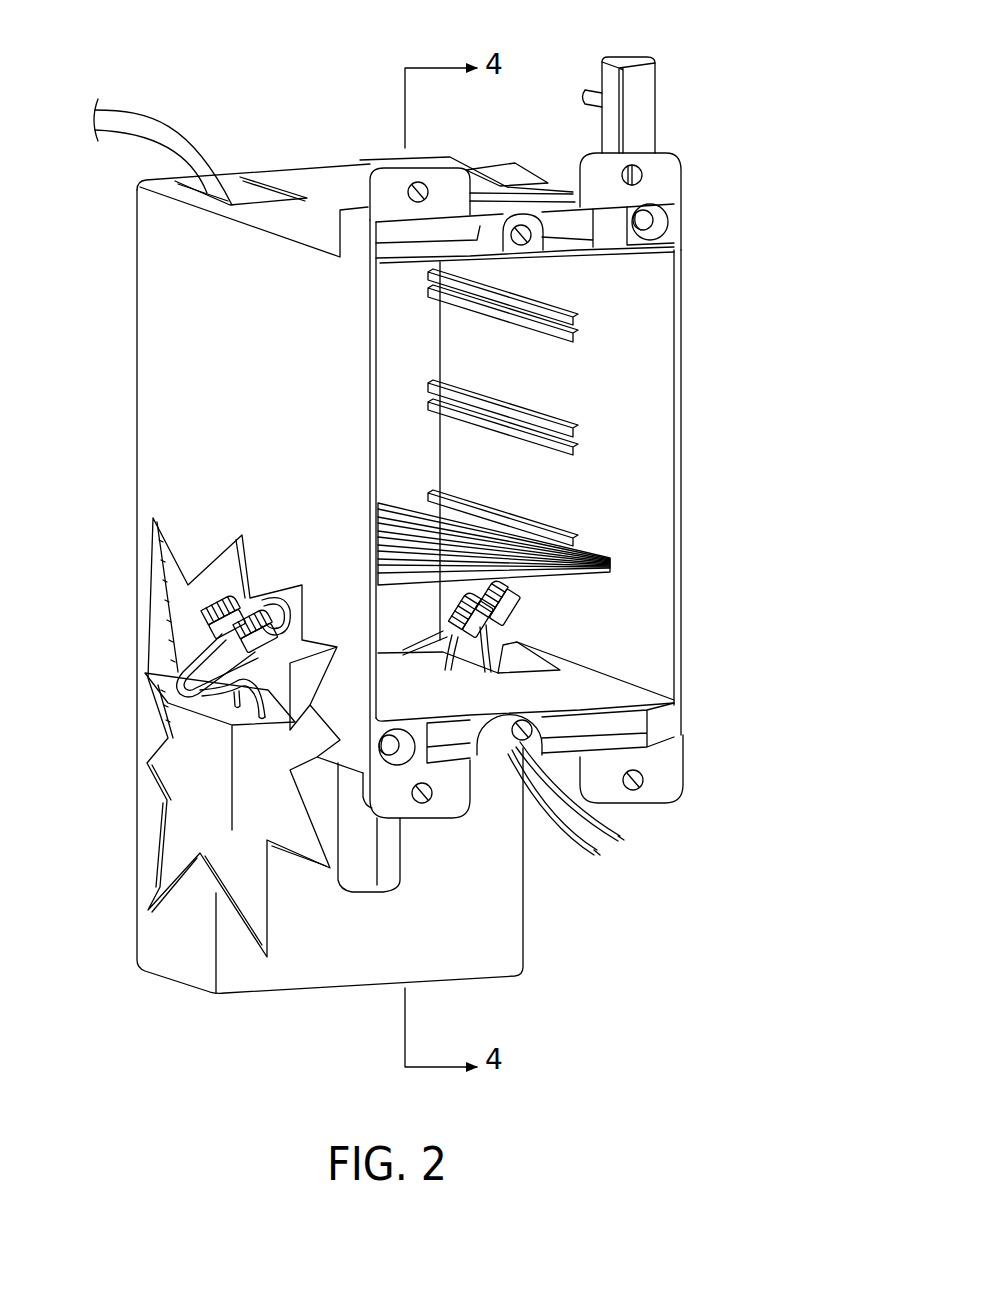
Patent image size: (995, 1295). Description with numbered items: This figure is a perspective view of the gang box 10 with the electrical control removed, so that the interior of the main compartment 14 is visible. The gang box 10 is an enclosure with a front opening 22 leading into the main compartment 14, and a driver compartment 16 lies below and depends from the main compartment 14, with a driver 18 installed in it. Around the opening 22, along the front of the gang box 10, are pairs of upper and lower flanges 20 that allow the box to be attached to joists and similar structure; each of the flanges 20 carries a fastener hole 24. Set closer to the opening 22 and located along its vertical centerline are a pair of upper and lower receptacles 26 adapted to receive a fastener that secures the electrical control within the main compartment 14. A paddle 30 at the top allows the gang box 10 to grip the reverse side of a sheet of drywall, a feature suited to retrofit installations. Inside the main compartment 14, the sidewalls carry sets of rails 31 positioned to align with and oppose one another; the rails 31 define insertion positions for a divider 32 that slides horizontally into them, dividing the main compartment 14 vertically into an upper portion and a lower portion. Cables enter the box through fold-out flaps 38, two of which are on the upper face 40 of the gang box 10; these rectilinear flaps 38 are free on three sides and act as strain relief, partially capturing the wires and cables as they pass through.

The gang box 10 is at (246, 79).
The main compartment 14 is at (634, 411).
The driver compartment 16 is at (168, 942).
The driver 18 is at (195, 766).
The upper and lower flanges 20 is at (383, 196).
The opening 22 is at (620, 522).
The fastener hole 24 is at (415, 190).
The upper and lower receptacles 26 is at (521, 233).
The paddle 30 is at (637, 83).
The rails 31 is at (548, 308).
The divider 32 is at (543, 570).
The fold-out flaps 38 is at (252, 195).
The upper face 40 is at (305, 176).